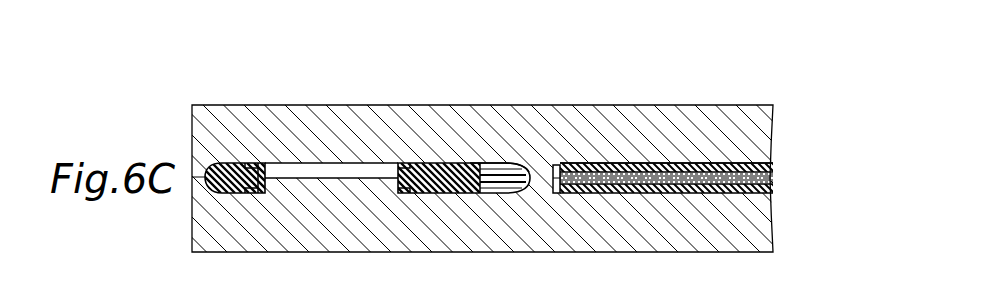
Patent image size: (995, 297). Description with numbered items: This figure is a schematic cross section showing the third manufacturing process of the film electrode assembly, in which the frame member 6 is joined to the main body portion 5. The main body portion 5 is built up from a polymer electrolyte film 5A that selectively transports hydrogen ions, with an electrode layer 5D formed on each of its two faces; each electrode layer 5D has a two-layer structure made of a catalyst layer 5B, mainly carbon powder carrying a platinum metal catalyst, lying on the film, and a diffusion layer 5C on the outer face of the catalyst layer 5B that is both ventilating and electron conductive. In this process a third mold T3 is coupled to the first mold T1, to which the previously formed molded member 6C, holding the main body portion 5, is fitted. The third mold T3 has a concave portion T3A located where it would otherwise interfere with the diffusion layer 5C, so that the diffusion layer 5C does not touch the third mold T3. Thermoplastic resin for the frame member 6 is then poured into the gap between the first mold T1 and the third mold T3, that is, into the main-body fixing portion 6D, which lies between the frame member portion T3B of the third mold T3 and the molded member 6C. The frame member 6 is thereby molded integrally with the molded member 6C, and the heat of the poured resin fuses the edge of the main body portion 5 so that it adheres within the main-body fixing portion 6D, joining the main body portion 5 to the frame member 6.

The frame member 6 is at (432, 57).
The molded member 6C is at (398, 163).
The main-body fixing portion 6D is at (473, 163).
The frame member portion T3B is at (503, 165).
The electrode layer 5D is at (541, 166).
The concave portion T3A is at (585, 164).
The third mold T3 is at (757, 138).
The first mold T1 is at (757, 222).
The main body portion 5 is at (869, 102).
The diffusion layer 5C is at (773, 163).
The catalyst layer 5B is at (773, 173).
The polymer electrolyte film 5A is at (773, 178).